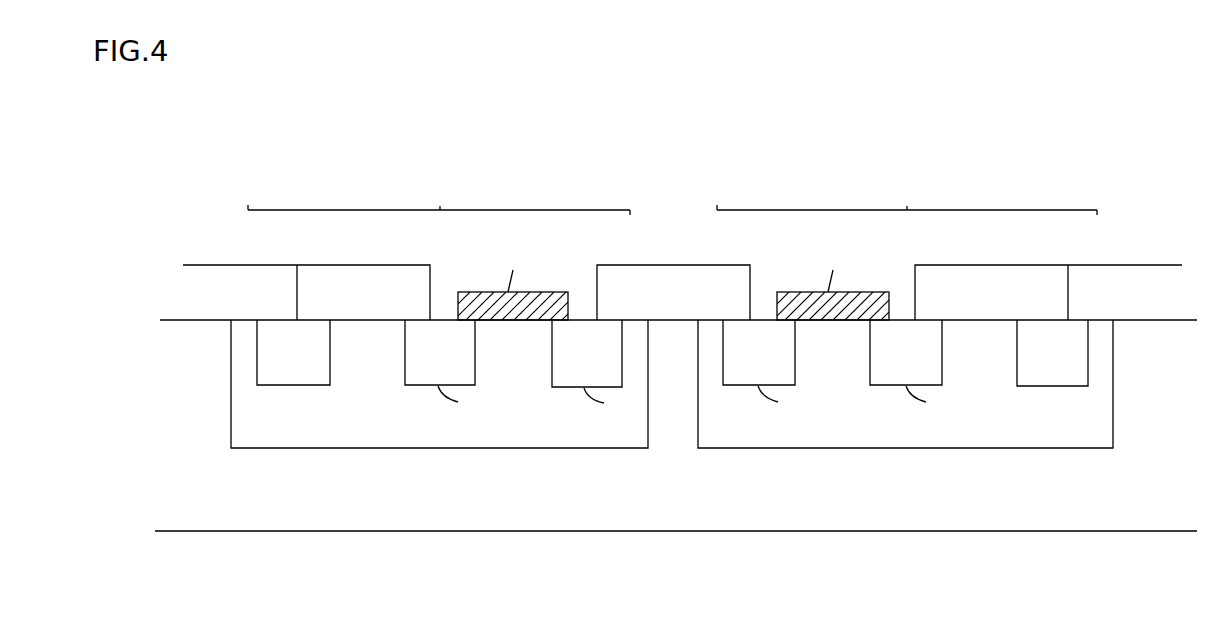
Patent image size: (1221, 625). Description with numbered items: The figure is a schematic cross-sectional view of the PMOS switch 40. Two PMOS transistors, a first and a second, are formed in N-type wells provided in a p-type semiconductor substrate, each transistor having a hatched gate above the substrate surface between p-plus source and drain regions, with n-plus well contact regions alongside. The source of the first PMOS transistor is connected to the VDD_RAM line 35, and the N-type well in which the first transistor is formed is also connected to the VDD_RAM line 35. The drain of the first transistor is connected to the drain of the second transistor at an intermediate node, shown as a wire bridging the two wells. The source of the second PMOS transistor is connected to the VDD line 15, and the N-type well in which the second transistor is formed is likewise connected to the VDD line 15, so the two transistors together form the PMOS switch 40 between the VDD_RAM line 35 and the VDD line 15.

The PMOS switch 40 is at (1093, 163).
The VDD_RAM line 35 is at (285, 279).
The VDD line 15 is at (1056, 276).